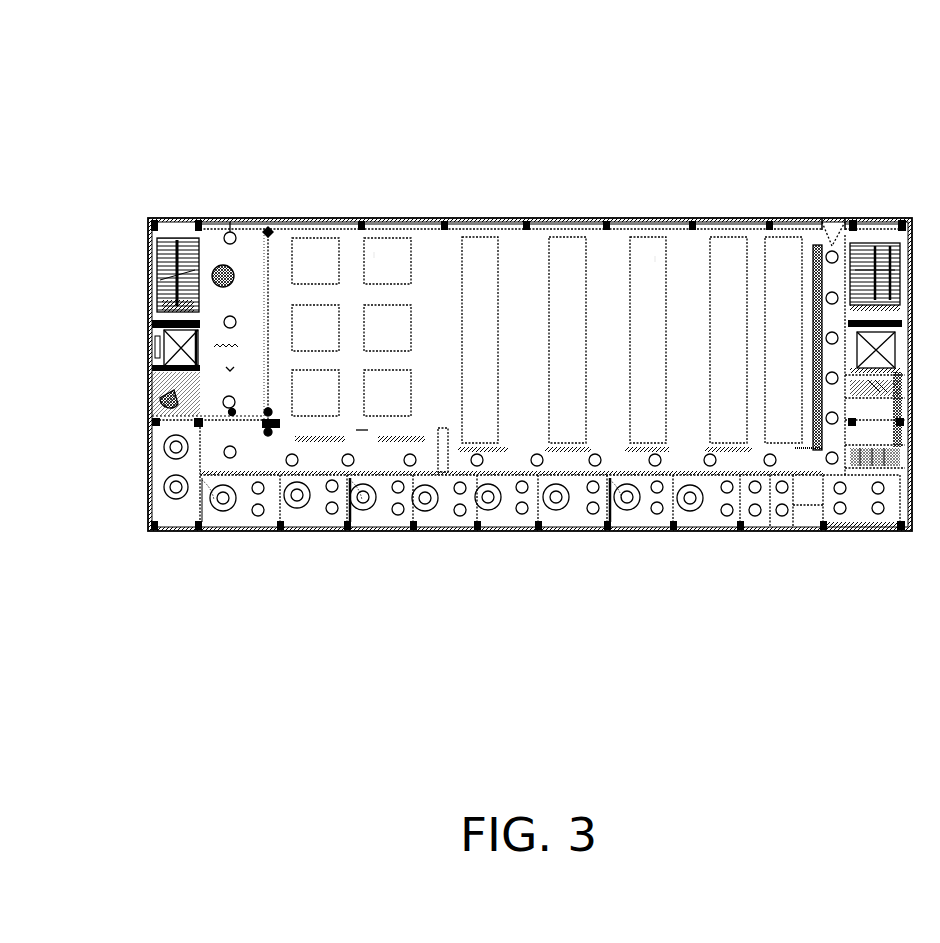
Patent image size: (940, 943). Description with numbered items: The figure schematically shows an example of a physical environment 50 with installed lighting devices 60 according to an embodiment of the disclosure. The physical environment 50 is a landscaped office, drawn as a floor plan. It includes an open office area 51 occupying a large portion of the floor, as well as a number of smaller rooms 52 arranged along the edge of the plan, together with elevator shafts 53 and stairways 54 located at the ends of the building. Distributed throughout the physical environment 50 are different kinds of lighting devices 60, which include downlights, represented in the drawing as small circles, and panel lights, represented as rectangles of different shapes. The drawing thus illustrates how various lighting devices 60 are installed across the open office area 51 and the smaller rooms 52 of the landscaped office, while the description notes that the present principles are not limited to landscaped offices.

The physical environment 50 is at (92, 84).
The open office area 51 is at (530, 270).
The smaller rooms 52 is at (383, 516).
The elevator shafts 53 is at (150, 347).
The stairways 54 is at (150, 264).
The lighting devices 60 is at (232, 230).